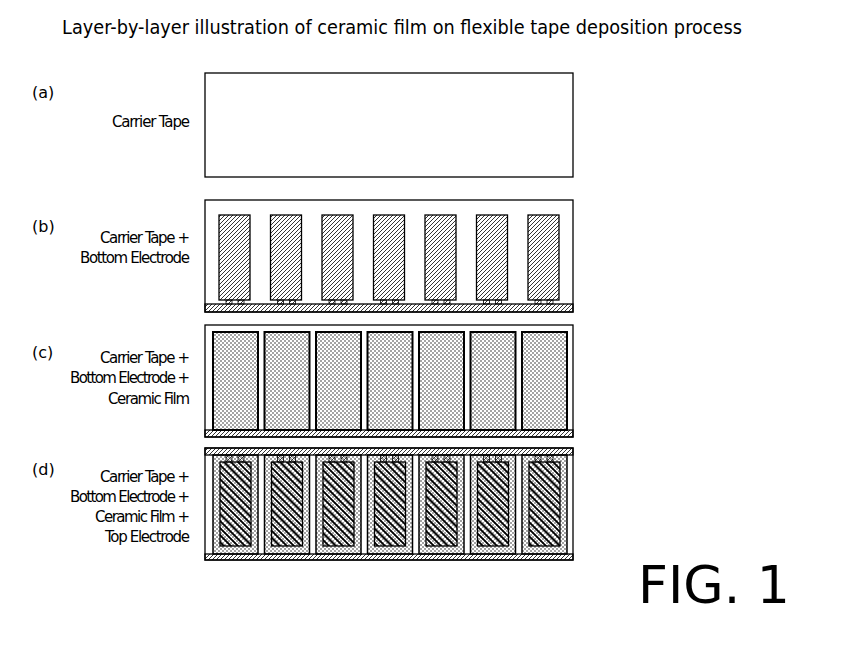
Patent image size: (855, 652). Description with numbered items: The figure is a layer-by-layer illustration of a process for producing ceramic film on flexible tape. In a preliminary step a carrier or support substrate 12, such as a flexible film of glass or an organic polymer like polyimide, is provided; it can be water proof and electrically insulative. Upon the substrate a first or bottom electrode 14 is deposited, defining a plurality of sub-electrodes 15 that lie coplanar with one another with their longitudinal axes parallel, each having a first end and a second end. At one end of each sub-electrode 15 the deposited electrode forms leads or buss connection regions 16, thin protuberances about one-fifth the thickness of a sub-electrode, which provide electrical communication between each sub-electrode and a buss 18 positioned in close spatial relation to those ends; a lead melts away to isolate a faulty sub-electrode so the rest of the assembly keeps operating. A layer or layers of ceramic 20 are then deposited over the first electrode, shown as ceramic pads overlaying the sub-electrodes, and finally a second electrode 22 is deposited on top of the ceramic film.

The carrier or support substrate 12 is at (537, 119).
The first or bottom electrode 14 is at (213, 210).
The sub-electrode 15 is at (543, 236).
The leads or buss connection regions 16 is at (347, 300).
The buss 18 is at (557, 308).
The ceramic 20 is at (236, 394).
The second electrode 22 is at (542, 502).